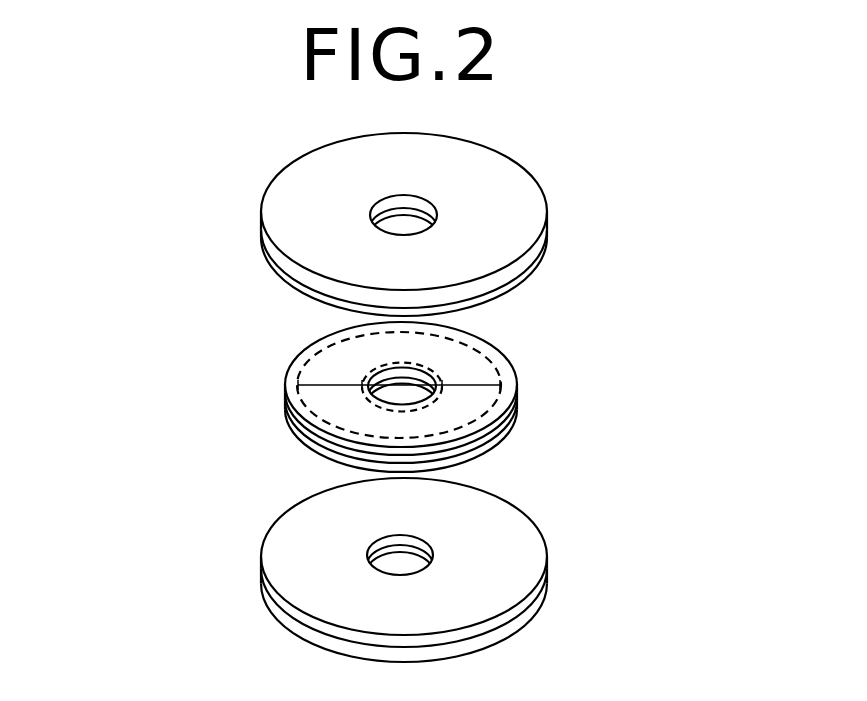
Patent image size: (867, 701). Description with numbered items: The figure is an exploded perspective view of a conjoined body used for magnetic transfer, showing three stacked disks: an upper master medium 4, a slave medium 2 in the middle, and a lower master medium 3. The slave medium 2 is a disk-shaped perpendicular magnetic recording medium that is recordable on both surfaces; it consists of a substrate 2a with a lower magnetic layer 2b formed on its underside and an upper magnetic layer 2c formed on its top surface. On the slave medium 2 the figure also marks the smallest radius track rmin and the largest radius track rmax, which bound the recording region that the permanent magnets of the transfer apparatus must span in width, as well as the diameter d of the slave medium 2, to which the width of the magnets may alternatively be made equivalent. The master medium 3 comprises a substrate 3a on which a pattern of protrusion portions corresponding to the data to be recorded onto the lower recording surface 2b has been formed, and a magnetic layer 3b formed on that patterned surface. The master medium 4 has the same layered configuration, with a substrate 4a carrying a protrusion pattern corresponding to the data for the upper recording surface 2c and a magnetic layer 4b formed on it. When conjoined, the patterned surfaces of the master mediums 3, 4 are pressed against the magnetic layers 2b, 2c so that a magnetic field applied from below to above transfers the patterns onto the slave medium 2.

The slave medium 2 is at (405, 389).
The substrate 2a is at (287, 413).
The magnetic layer 2b is at (295, 433).
The magnetic layer 2c is at (288, 399).
The master medium 3 is at (392, 570).
The substrate 3a is at (265, 597).
The magnetic layer 3b is at (262, 567).
The master medium 4 is at (391, 224).
The substrate 4a is at (267, 228).
The magnetic layer 4b is at (268, 258).
The diameter d is at (322, 383).
The smallest radius track rmin is at (438, 376).
The largest radius track rmax is at (500, 378).